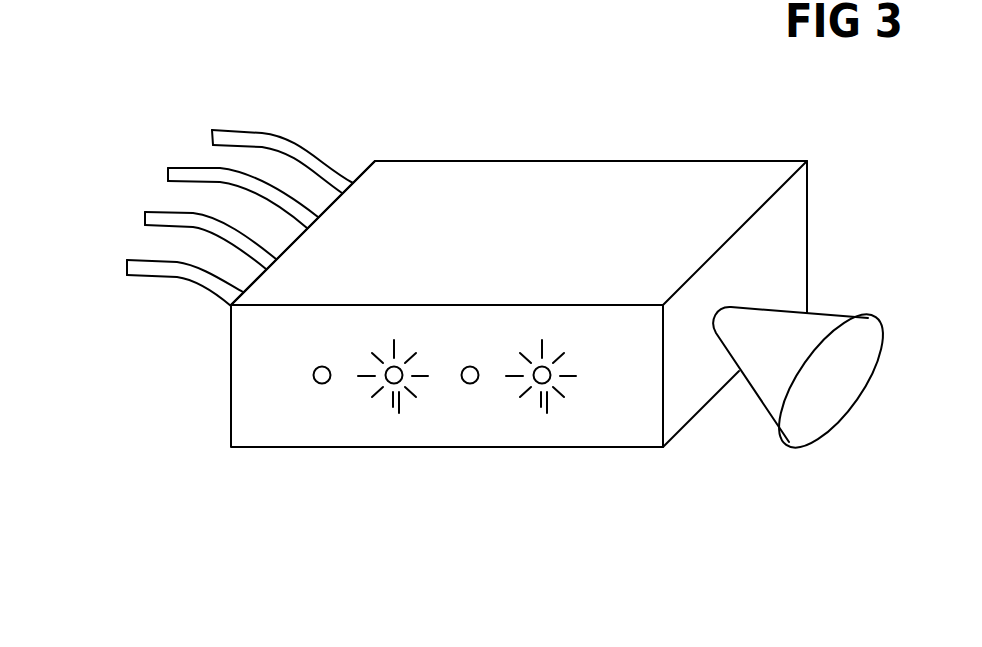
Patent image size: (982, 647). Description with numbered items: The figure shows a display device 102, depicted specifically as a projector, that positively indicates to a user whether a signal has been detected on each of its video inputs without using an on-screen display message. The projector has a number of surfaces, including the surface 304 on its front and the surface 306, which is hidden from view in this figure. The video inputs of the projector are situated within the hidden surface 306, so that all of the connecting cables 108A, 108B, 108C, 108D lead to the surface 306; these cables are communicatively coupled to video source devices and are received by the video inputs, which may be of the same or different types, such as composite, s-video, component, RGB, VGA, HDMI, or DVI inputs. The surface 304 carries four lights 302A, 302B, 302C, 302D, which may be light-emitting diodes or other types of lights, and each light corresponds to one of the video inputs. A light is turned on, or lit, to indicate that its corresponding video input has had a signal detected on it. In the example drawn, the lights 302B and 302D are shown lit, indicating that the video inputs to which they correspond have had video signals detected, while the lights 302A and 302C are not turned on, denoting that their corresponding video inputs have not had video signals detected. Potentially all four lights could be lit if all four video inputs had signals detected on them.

The display device 102 is at (663, 161).
The surface 304 is at (647, 333).
The surface 306 is at (358, 151).
The connecting cable 108A is at (212, 137).
The connecting cable 108B is at (167, 174).
The connecting cable 108C is at (144, 215).
The connecting cable 108D is at (127, 268).
The light 302A is at (322, 384).
The light 302B is at (399, 413).
The light 302C is at (470, 384).
The light 302D is at (547, 413).